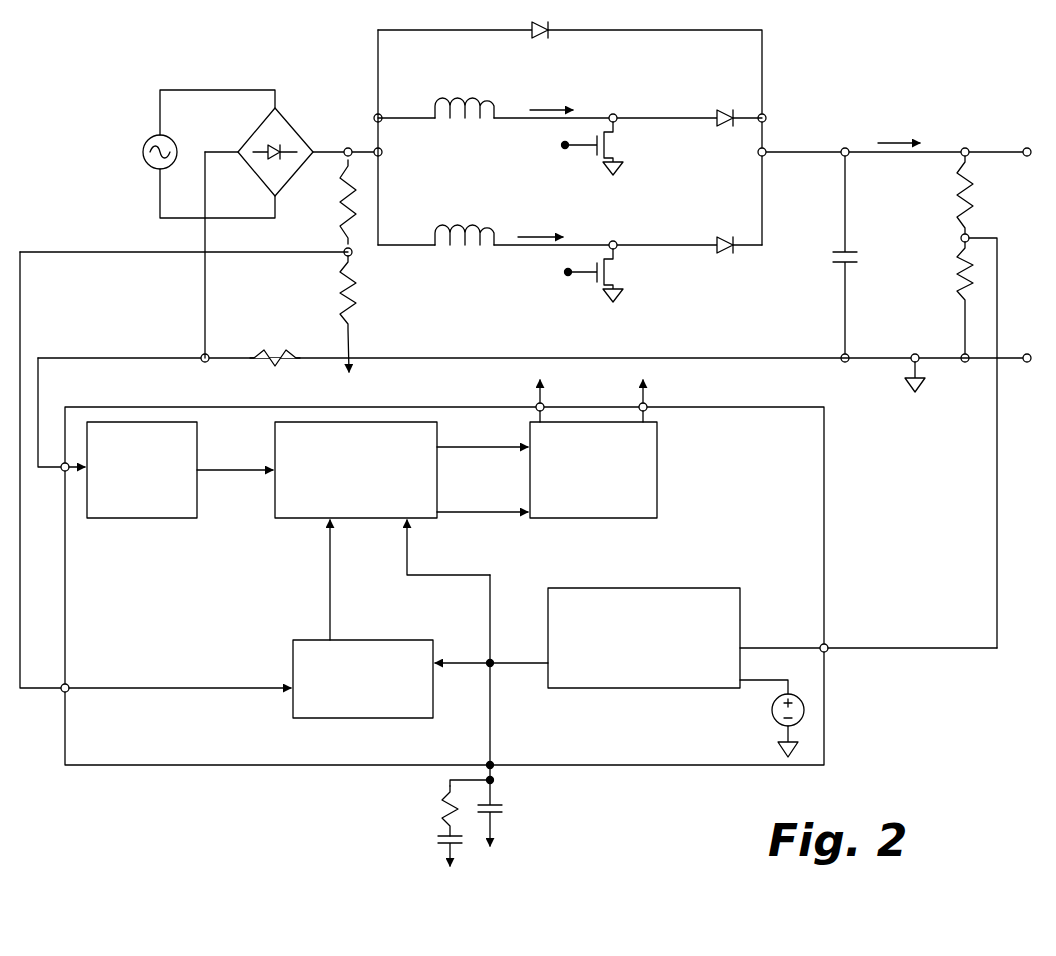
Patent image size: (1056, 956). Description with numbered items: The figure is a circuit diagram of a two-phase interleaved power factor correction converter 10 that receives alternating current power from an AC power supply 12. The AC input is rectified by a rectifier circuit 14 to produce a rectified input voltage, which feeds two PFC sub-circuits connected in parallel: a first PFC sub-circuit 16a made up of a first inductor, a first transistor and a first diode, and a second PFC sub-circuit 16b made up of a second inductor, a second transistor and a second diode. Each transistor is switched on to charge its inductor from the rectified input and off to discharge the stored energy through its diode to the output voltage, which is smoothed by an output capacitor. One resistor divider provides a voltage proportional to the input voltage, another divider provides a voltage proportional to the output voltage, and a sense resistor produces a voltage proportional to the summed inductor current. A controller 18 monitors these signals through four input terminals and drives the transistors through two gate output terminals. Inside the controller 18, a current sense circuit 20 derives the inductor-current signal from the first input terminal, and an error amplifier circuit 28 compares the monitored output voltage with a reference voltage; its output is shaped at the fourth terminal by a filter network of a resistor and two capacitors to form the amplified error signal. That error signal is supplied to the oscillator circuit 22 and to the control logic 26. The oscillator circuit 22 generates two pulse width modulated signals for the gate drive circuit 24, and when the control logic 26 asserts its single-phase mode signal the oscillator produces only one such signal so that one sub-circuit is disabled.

The PFC converter 10 is at (889, 717).
The AC power supply 12 is at (147, 136).
The rectifier circuit 14 is at (291, 121).
The first PFC sub-circuit 16a is at (416, 104).
The second PFC sub-circuit 16b is at (406, 210).
The controller 18 is at (824, 455).
The current sense circuit 20 is at (138, 422).
The oscillator circuit 22 is at (345, 422).
The gate drive circuit 24 is at (657, 460).
The control logic 26 is at (293, 650).
The error amplifier circuit 28 is at (646, 588).